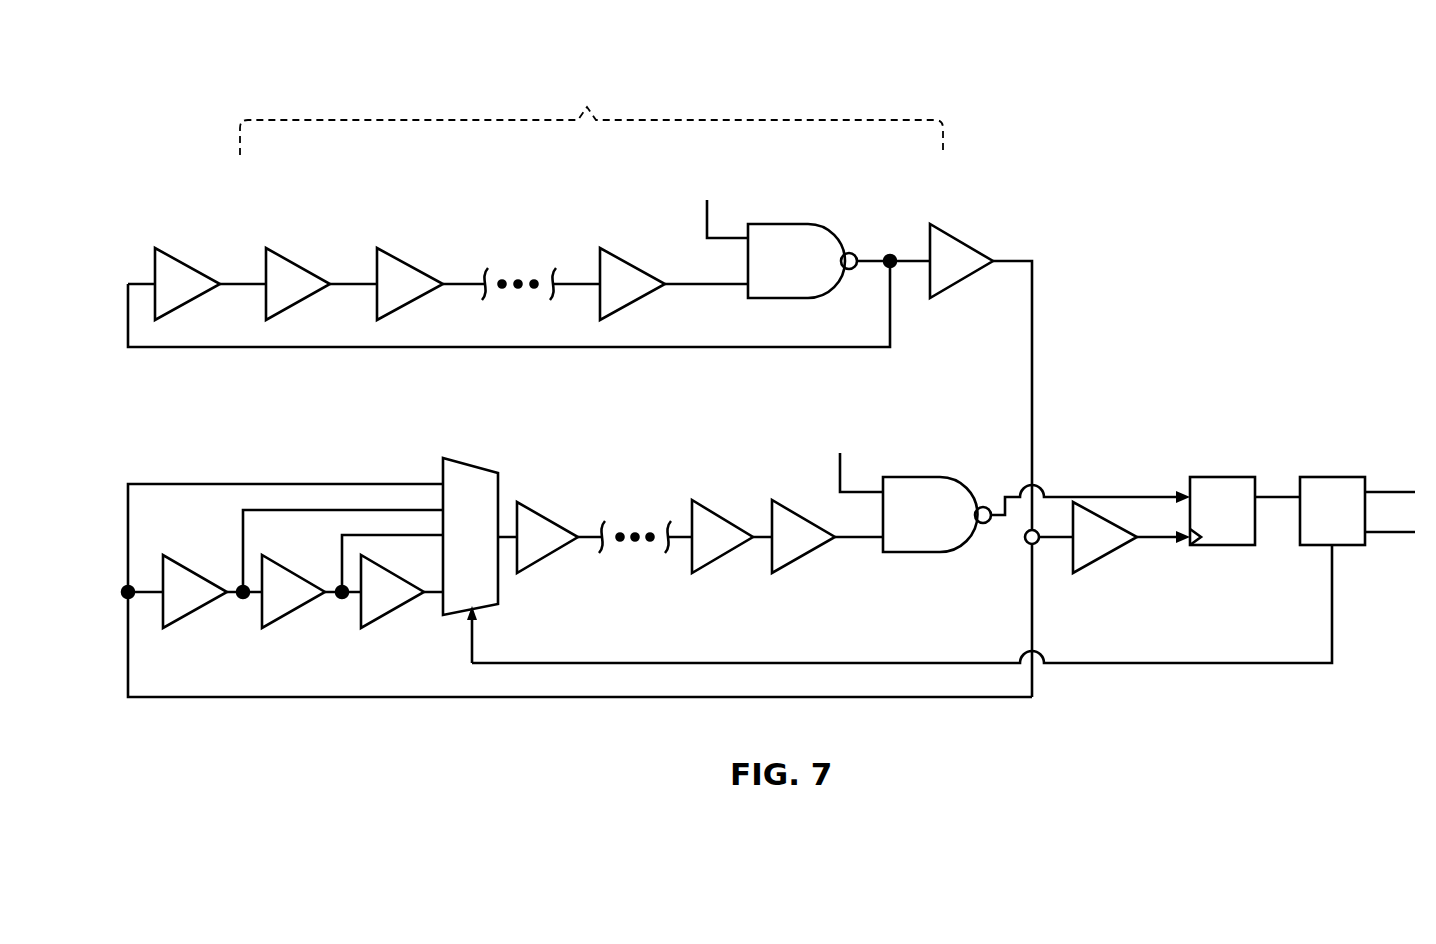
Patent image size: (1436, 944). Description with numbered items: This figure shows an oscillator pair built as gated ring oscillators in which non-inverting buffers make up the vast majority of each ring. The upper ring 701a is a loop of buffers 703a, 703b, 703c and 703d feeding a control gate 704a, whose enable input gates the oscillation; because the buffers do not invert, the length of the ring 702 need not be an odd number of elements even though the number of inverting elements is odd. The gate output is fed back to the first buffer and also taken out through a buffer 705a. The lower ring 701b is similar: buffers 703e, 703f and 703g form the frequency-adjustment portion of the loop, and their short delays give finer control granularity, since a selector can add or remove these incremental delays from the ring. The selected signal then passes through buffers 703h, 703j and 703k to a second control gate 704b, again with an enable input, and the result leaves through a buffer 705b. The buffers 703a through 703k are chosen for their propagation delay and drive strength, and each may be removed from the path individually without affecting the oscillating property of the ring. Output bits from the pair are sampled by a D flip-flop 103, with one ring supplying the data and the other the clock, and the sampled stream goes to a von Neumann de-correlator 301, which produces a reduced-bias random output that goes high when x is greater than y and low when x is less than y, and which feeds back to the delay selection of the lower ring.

The ring 701a is at (227, 205).
The ring 701b is at (225, 470).
The ring 702 is at (591, 112).
The buffer 703a is at (172, 248).
The buffer 703b is at (283, 248).
The buffer 703c is at (395, 248).
The buffer 703d is at (615, 248).
The buffer 703e is at (176, 621).
The buffer 703f is at (275, 621).
The buffer 703g is at (374, 621).
The buffer 703h is at (531, 505).
The buffer 703j is at (706, 503).
The buffer 703k is at (784, 503).
The control gate 704a is at (767, 224).
The control gate 704b is at (900, 477).
The output buffer 705a is at (946, 228).
The output buffer 705b is at (1087, 568).
The D flip-flop 103 is at (1213, 477).
The von Neumann de-correlator 301 is at (1315, 477).